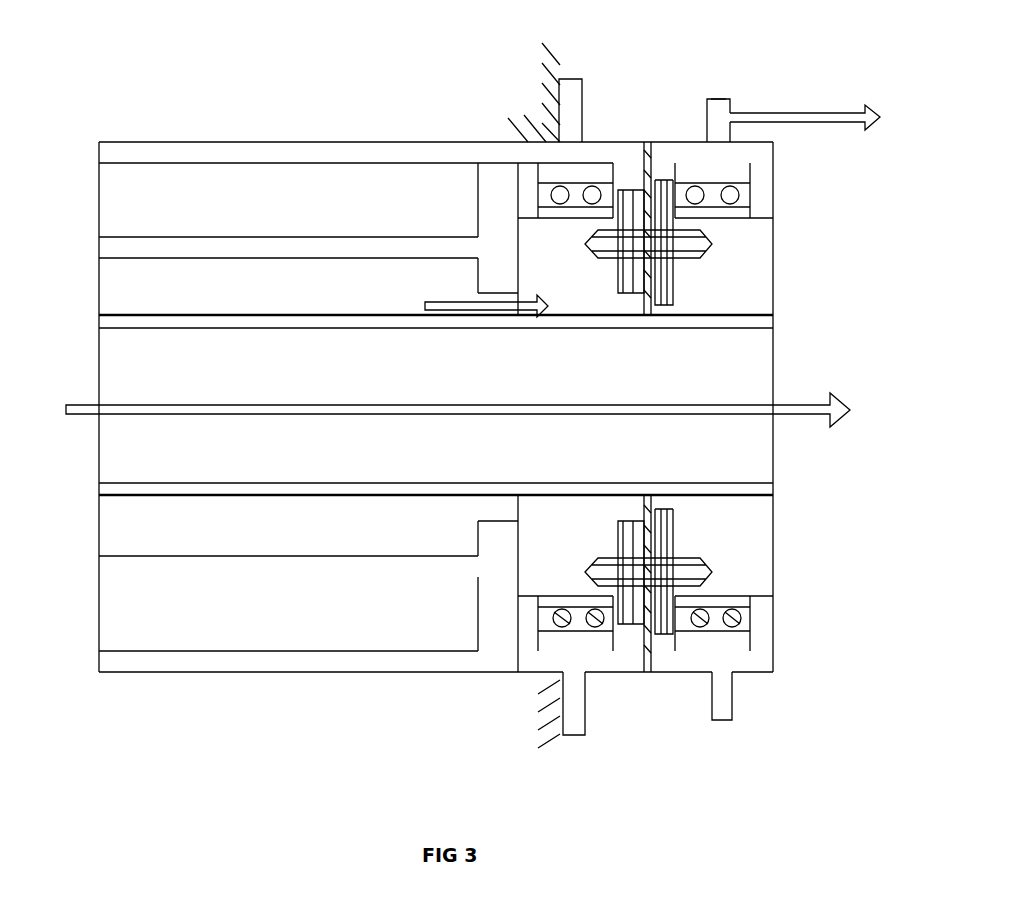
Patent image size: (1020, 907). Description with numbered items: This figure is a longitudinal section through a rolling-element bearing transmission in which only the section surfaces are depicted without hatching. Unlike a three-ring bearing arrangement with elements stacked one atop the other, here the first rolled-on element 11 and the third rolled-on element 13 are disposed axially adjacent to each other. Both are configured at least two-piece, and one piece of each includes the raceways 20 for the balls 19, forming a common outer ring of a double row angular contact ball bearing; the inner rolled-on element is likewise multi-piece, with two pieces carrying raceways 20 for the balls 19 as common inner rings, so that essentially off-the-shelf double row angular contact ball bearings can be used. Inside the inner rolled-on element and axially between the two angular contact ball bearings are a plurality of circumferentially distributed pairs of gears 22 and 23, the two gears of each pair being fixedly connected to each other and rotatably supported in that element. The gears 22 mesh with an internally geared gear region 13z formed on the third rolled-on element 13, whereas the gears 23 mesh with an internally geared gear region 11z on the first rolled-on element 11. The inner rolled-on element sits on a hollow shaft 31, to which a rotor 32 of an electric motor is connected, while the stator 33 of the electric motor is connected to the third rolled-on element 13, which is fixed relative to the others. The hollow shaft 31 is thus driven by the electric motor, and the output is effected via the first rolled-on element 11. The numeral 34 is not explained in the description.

The first rolled-on element 11 is at (740, 143).
The internally geared gear region 11z is at (657, 183).
The third rolled-on element 13 is at (578, 162).
The internally geared gear region 13z is at (631, 188).
The balls 19 is at (733, 197).
The raceways 20 is at (560, 627).
The gears 22 is at (628, 275).
The gears 23 is at (670, 290).
The hollow shaft 31 is at (143, 368).
The rotor 32 is at (142, 286).
The stator 33 is at (285, 187).
The port 34 is at (718, 102).